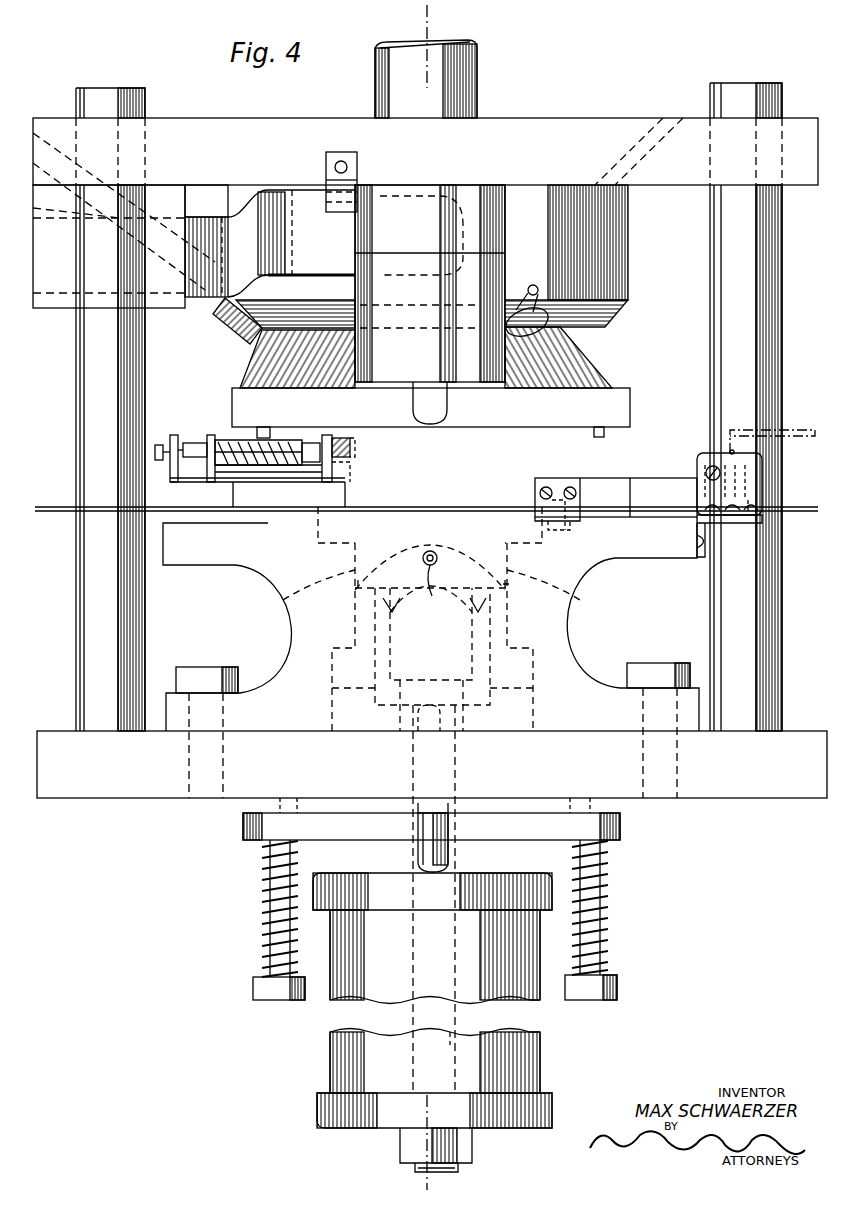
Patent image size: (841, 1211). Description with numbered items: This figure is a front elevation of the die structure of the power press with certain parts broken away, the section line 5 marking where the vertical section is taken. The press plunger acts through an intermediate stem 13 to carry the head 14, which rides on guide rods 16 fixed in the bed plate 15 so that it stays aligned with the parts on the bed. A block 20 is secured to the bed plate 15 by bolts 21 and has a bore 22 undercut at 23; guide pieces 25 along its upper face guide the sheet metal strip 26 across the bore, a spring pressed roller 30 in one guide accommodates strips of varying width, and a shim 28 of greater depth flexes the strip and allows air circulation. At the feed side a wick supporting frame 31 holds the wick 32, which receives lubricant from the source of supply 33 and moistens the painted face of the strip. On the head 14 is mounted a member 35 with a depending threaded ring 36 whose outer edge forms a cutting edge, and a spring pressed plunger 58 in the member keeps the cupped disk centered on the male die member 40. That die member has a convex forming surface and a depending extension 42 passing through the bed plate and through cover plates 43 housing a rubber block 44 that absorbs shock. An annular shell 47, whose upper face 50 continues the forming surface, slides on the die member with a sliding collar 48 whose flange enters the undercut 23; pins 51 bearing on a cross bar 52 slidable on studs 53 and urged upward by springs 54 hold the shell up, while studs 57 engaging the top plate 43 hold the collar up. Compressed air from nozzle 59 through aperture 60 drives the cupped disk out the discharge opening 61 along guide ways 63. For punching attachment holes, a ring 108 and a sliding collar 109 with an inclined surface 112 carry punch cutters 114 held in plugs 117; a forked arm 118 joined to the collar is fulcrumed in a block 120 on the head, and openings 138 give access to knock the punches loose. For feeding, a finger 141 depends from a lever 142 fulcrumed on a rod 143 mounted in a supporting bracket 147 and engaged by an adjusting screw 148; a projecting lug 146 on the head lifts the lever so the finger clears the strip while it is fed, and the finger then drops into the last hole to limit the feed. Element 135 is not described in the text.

The section line 5— 5 is at (440, 20).
The intermediate stem 13 is at (478, 60).
The head 14 is at (537, 118).
The bed plate 15 is at (758, 790).
The guide rods 16 is at (80, 350).
The block 20 is at (566, 600).
The bolts 21 is at (186, 772).
The bore 22 is at (525, 515).
The undercut portion 23 is at (332, 703).
The guide pieces 25 is at (662, 478).
The strip 26 is at (58, 507).
The shim 28 is at (248, 500).
The spring pressed roller 30 is at (596, 520).
The wick supporting frame 31 is at (765, 462).
The wick 32 is at (728, 515).
The source of supply 33 is at (792, 428).
The member 35 is at (430, 283).
The ring 36 is at (482, 388).
The male die member 40 is at (355, 627).
The depending extension 42 is at (450, 1000).
The cover plates 43 is at (386, 868).
The rubber block 44 is at (392, 1000).
The annular shell 47 is at (375, 665).
The sliding collar 48 is at (495, 616).
The upper face of shell 50 is at (352, 597).
The pins 51 is at (452, 772).
The cross bar 52 is at (541, 832).
The studs 53 is at (264, 903).
The springs 54 is at (300, 865).
The studs 57 is at (450, 858).
The spring pressed plunger 58 is at (432, 428).
The nozzle 59 is at (440, 556).
The aperture 60 is at (434, 596).
The discharge opening 61 is at (490, 568).
The guide ways 63 is at (362, 580).
The ring 108 is at (610, 372).
The sliding collar 109 is at (600, 224).
The inclined surface 112 is at (592, 354).
The punch cutters 114 is at (540, 290).
The plugs 117 is at (515, 300).
The forked arm 118 is at (222, 300).
The block 120 is at (180, 310).
The stops 135 is at (265, 428).
The openings 138 is at (620, 128).
The finger 141 is at (342, 474).
The lever 142 is at (345, 440).
The rod 143 is at (210, 440).
The projecting lug 146 is at (335, 212).
The supporting bracket 147 is at (176, 435).
The adjusting screw 148 is at (160, 450).